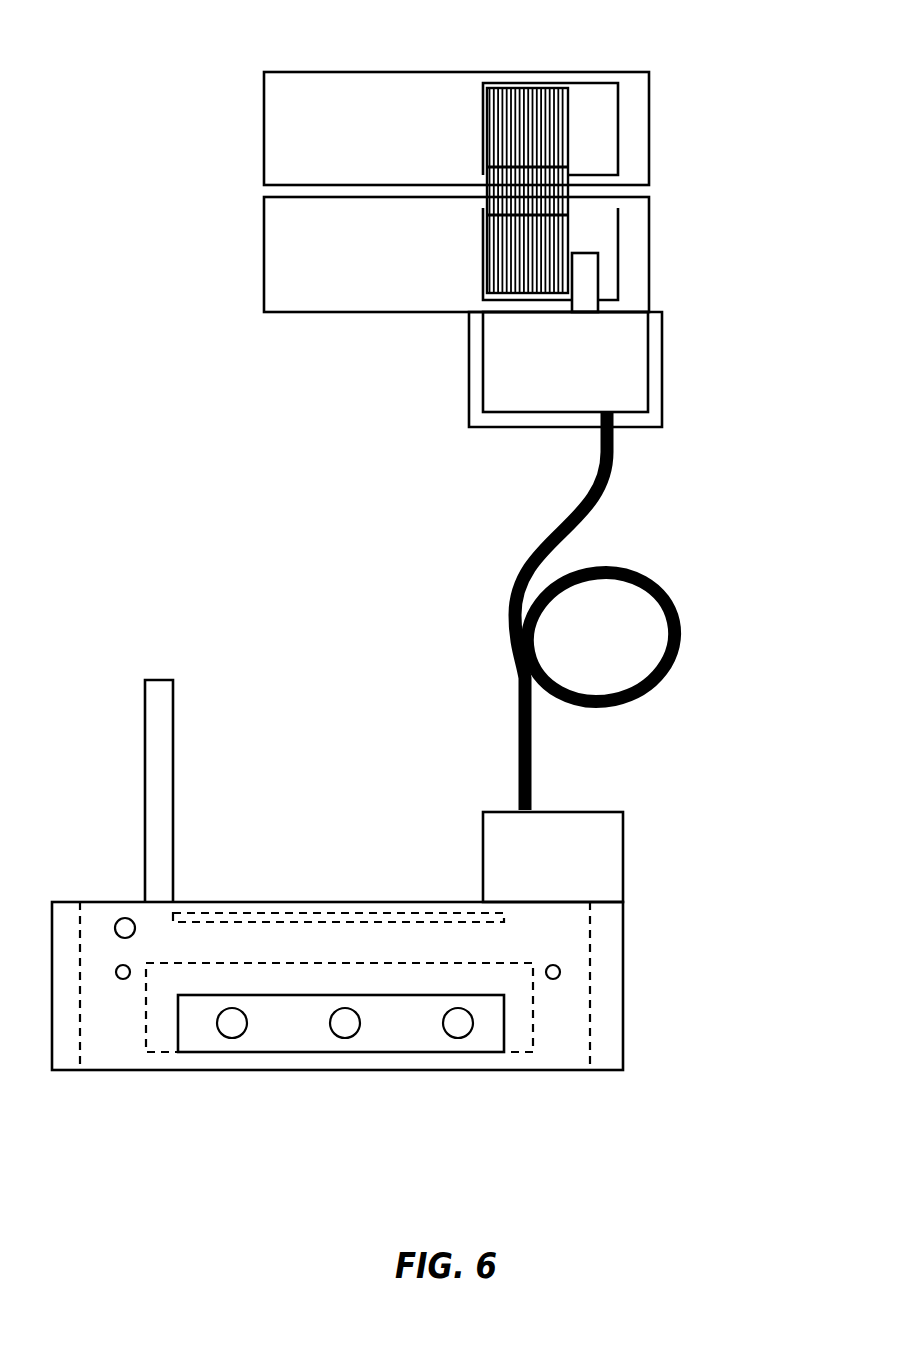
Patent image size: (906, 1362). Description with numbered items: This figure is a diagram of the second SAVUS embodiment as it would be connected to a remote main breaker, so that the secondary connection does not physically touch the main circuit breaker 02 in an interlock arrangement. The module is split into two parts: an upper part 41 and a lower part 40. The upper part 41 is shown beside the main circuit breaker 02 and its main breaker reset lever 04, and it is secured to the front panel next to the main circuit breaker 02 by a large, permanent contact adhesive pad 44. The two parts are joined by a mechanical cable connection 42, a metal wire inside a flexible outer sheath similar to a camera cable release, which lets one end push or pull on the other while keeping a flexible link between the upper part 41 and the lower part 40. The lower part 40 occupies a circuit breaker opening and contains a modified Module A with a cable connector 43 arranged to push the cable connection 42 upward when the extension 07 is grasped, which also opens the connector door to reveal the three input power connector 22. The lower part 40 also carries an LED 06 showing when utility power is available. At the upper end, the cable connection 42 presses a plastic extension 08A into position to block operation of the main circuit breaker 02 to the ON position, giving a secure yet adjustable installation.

The main circuit breaker 02 is at (310, 250).
The main breaker reset lever 04 is at (551, 83).
The plastic extension 08A is at (598, 270).
The upper part 41 is at (608, 358).
The contact adhesive pad 44 is at (468, 414).
The mechanical cable connection 42 is at (680, 645).
The cable connector 43 is at (597, 852).
The extension 07 is at (162, 732).
The LED 06 is at (120, 918).
The lower part 40 is at (270, 902).
The input power connector 22 is at (407, 1028).